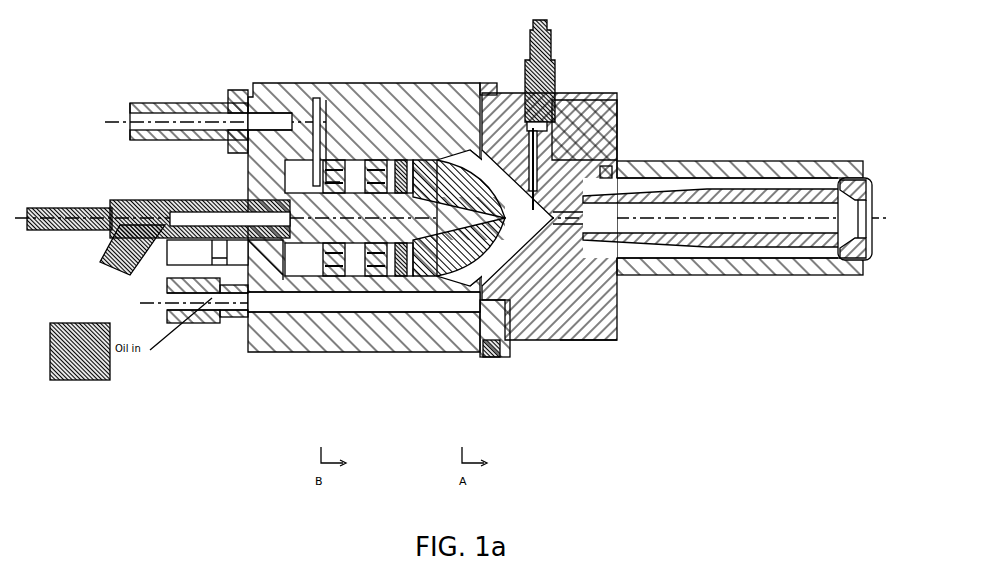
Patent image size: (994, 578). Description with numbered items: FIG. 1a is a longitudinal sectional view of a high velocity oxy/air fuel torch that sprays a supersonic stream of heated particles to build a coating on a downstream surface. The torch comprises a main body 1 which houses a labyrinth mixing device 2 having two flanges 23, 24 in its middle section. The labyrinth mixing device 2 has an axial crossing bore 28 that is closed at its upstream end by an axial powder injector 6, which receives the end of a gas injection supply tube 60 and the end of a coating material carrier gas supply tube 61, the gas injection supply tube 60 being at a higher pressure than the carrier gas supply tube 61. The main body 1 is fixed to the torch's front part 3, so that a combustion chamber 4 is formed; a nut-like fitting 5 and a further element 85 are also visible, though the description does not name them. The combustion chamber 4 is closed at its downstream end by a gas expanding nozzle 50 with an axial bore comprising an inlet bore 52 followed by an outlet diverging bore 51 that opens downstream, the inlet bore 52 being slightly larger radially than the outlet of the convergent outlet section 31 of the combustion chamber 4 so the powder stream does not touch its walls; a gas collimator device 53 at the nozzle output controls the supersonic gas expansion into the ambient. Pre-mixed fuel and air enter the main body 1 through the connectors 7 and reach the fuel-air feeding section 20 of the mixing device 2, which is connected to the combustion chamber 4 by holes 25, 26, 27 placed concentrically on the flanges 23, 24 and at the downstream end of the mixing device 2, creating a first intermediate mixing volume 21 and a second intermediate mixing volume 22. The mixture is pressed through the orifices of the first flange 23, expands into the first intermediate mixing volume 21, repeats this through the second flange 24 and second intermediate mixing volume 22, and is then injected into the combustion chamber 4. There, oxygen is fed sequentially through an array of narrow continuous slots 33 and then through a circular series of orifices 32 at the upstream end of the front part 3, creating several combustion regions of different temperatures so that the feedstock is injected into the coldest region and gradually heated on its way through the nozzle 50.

The main body 1 is at (285, 87).
The labyrinth mixing device 2 is at (152, 120).
The front part 3 is at (558, 97).
The combustion chamber 4 is at (600, 110).
The pipe nut 5 is at (237, 97).
The axial powder injector 6 is at (257, 205).
The connectors 7 is at (80, 351).
The fuel-air feeding section 20 is at (314, 163).
The first intermediate mixing volume 21 is at (331, 172).
The second intermediate mixing volume 22 is at (397, 172).
The first flange 23 is at (480, 265).
The second flange 24 is at (333, 323).
The hole 25 is at (300, 325).
The hole 26 is at (510, 340).
The hole 27 is at (543, 343).
The axial crossing bore 28 is at (593, 337).
The convergent outlet section 31 is at (623, 290).
The circular series of orifices 32 is at (487, 91).
The array of narrow continuous slots 33 is at (552, 30).
The gas expanding nozzle 50 is at (740, 245).
The outlet diverging bore 51 is at (688, 192).
The inlet bore 52 is at (613, 168).
The gas collimator device 53 is at (865, 207).
The gas injection supply tube 60 is at (105, 208).
The coating material carrier gas supply tube 61 is at (122, 256).
The piston element 85 is at (425, 285).